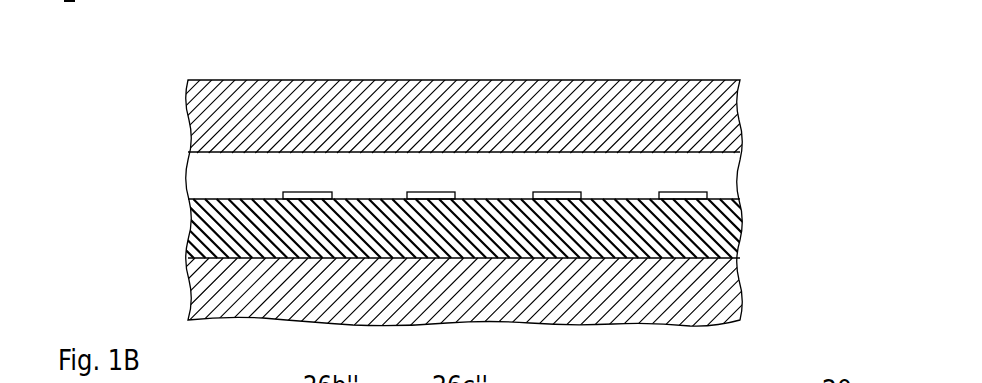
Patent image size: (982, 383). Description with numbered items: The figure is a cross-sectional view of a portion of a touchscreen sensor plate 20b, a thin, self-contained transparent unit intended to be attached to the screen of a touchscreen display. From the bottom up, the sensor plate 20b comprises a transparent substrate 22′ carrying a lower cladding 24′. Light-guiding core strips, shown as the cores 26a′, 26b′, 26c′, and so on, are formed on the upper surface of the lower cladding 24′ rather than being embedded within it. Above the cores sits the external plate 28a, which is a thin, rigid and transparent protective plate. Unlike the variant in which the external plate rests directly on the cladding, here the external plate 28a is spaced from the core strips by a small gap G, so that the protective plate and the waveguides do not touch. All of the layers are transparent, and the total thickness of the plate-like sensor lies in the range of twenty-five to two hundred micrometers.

The touchscreen sensor plate 20b is at (472, 166).
The external plate 28a is at (320, 113).
The core 26a′ is at (292, 192).
The core 26b′ is at (423, 192).
The core 26c′ is at (548, 192).
The gap G is at (708, 167).
The lower cladding 24′ is at (710, 232).
The transparent substrate 22′ is at (720, 290).